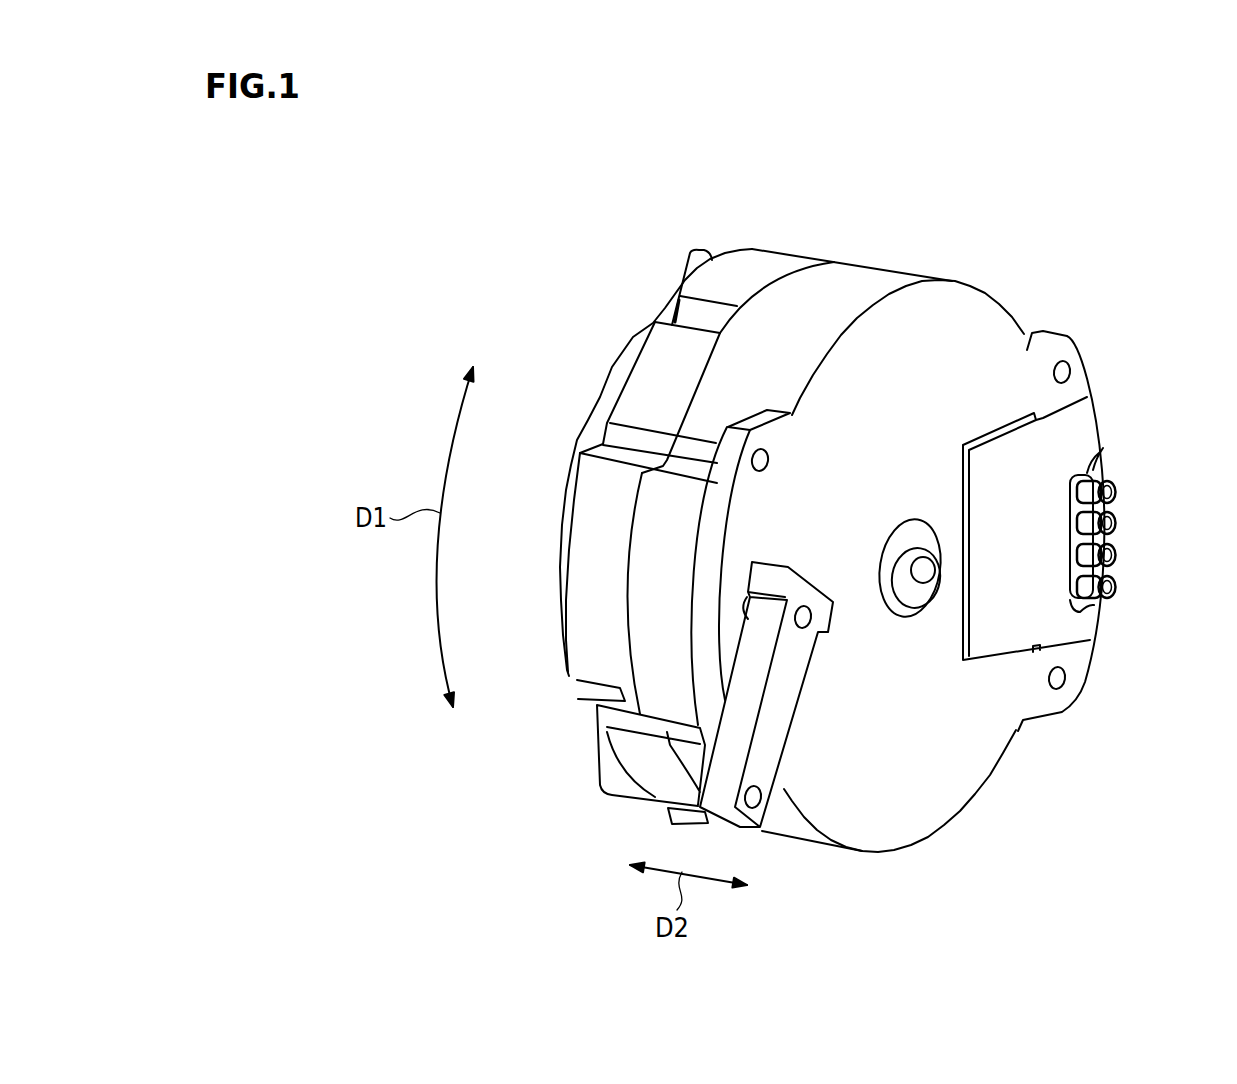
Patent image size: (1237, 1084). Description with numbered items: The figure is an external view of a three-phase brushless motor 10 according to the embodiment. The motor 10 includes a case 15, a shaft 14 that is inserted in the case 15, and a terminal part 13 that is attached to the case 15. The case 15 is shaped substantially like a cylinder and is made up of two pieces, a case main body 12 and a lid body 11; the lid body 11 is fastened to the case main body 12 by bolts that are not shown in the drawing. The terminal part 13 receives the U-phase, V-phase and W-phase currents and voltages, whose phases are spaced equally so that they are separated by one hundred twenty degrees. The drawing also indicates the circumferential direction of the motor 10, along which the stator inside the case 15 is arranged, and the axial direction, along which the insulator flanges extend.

The motor 10 is at (884, 484).
The stator core 11 is at (770, 262).
The housing 12 is at (902, 522).
The connector 13 is at (1117, 528).
The shaft 14 is at (922, 575).
The stator 15 is at (832, 487).